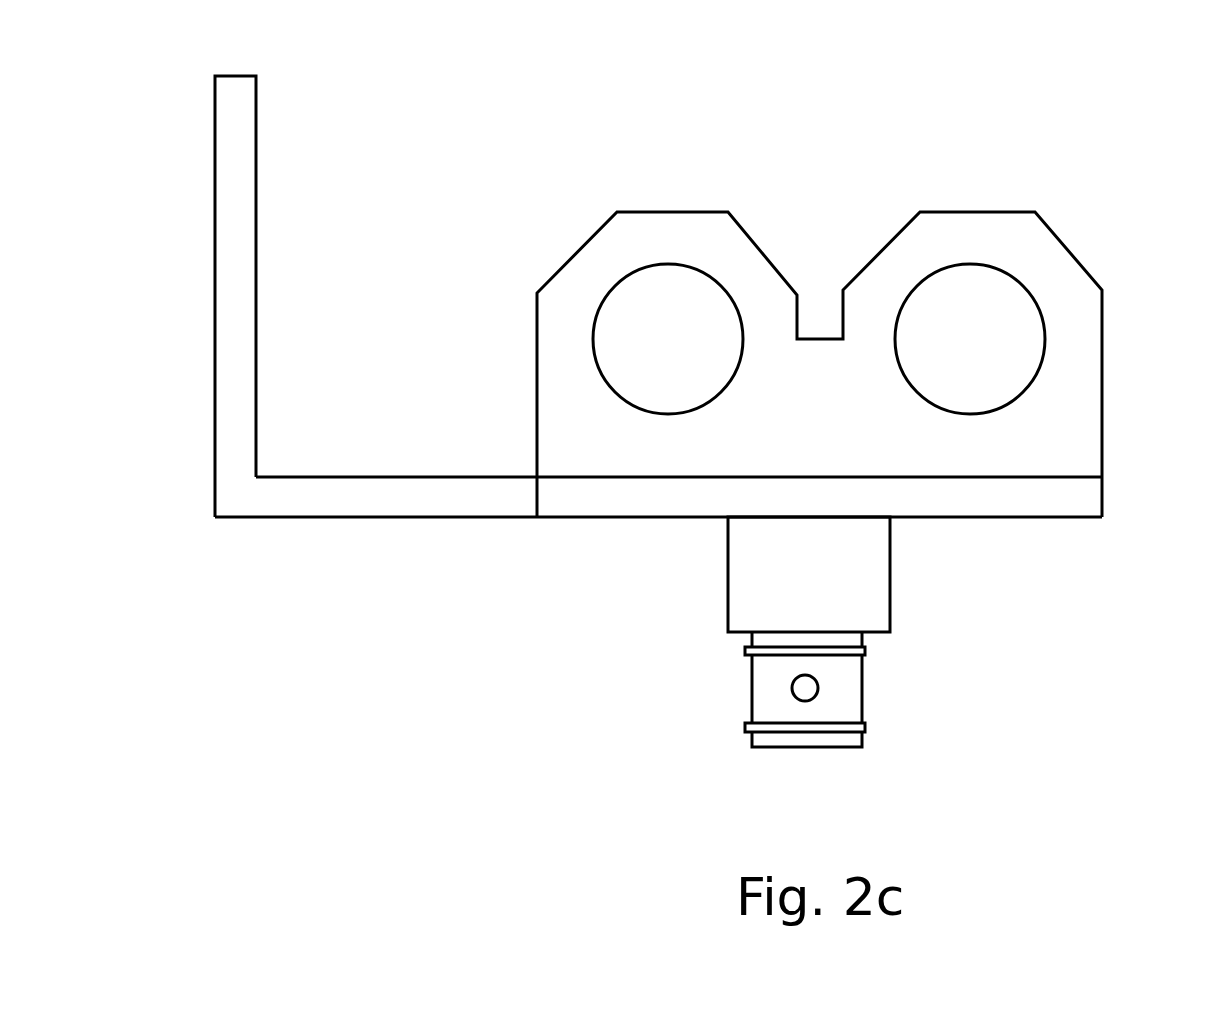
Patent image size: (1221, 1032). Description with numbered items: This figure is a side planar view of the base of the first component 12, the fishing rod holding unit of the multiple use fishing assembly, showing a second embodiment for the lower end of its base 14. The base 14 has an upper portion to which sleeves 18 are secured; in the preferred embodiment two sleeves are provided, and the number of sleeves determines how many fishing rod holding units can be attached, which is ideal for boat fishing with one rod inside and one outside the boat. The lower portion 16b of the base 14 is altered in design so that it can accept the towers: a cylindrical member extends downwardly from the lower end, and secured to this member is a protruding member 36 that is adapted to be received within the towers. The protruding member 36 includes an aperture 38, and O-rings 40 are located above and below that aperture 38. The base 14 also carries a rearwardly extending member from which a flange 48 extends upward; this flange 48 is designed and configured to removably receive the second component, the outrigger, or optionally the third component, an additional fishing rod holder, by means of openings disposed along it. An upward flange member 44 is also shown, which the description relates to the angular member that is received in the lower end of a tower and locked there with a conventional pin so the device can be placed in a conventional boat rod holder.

The first component 12 is at (1065, 170).
The base 14 is at (1067, 498).
The lower portion 16b is at (941, 682).
The sleeve 18 is at (1028, 378).
The protruding member 36 is at (757, 712).
The aperture 38 is at (825, 692).
The O-rings 40 is at (865, 653).
The upward flange member 44 is at (398, 500).
The flange 48 is at (227, 305).